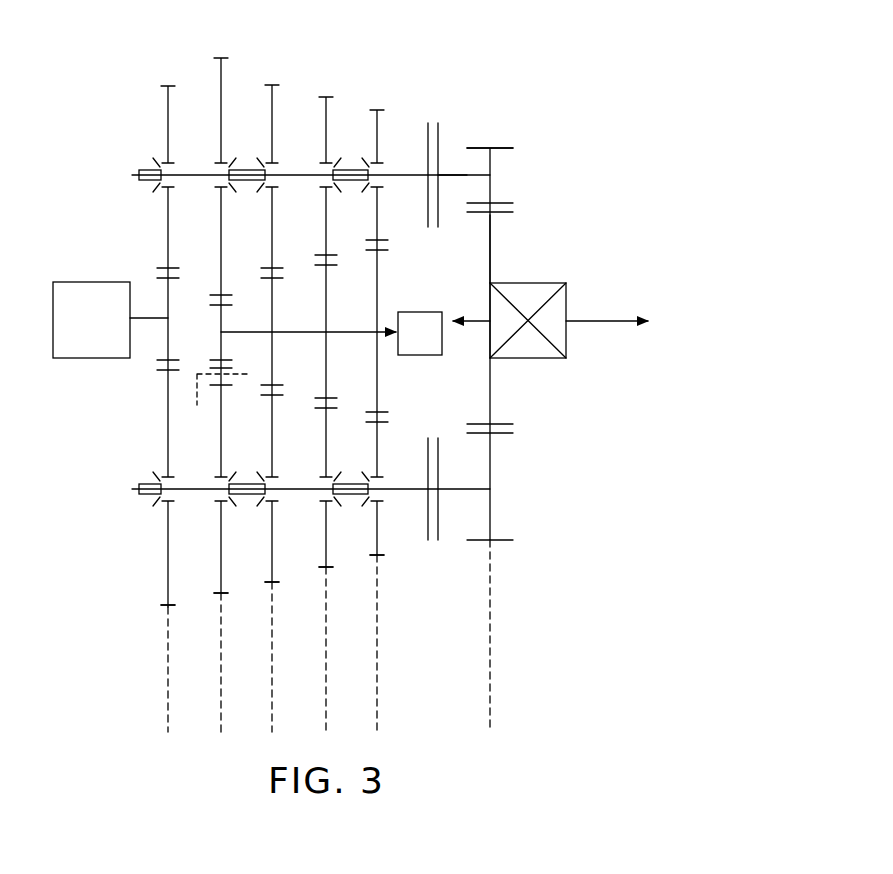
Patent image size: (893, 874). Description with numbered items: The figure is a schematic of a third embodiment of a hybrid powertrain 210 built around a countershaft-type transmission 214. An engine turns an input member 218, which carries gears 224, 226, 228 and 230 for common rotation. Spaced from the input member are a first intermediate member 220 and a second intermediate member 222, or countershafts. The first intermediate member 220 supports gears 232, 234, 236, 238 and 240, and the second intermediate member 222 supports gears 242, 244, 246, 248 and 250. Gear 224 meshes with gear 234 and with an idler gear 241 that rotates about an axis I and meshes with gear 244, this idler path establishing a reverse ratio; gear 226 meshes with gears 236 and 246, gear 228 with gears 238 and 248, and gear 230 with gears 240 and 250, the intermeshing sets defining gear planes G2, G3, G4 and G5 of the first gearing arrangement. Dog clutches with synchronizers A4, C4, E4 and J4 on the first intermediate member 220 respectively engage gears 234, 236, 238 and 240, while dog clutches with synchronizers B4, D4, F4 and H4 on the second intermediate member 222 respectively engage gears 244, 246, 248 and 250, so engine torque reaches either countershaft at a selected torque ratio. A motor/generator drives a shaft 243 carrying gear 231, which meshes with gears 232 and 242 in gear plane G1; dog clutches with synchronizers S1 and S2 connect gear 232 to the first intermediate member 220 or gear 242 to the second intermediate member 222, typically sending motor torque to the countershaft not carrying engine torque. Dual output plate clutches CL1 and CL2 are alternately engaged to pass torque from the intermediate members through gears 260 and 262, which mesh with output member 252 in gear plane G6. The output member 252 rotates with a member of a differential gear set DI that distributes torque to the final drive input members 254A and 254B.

The powertrain 210 is at (541, 141).
The countershaft-type transmission 214 is at (433, 75).
The input member 218 is at (350, 332).
The first intermediate member 220 is at (190, 175).
The second intermediate member 222 is at (185, 489).
The gear 224 is at (221, 347).
The gear 226 is at (275, 358).
The gear 228 is at (330, 365).
The gear 230 is at (380, 378).
The gear 231 is at (168, 340).
The gear 232 is at (168, 212).
The gear 234 is at (221, 248).
The gear 236 is at (273, 232).
The gear 238 is at (328, 235).
The gear 240 is at (378, 213).
The idler gear 241 is at (226, 380).
The gear 242 is at (168, 588).
The shaft of the motor/generator 243 is at (150, 318).
The gear 244 is at (221, 573).
The gear 246 is at (272, 563).
The gear 248 is at (326, 530).
The gear 250 is at (380, 553).
The output member 252 is at (490, 250).
The final drive input member 254A is at (473, 321).
The final drive input member 254B is at (602, 321).
The gear 260 is at (490, 162).
The gear 262 is at (490, 513).
The dual output plate clutch CL1 is at (441, 117).
The dual output plate clutch CL2 is at (446, 543).
The differential gear set DI is at (529, 368).
The dog clutch with synchronizer S1 is at (140, 131).
The dog clutch with synchronizer S2 is at (155, 508).
The dog clutch with synchronizer A4 is at (230, 144).
The dog clutch with synchronizer B4 is at (228, 518).
The dog clutch with synchronizer C4 is at (262, 144).
The dog clutch with synchronizer D4 is at (262, 518).
The dog clutch with synchronizer E4 is at (335, 144).
The dog clutch with synchronizer F4 is at (330, 518).
The dog clutch with synchronizer H4 is at (370, 518).
The dog clutch with synchronizer J4 is at (366, 144).
The axis I is at (197, 405).
The gear plane G1 is at (168, 708).
The gear plane G2 is at (221, 706).
The gear plane G3 is at (272, 705).
The gear plane G4 is at (326, 710).
The gear plane G5 is at (377, 709).
The gear plane G6 is at (490, 708).